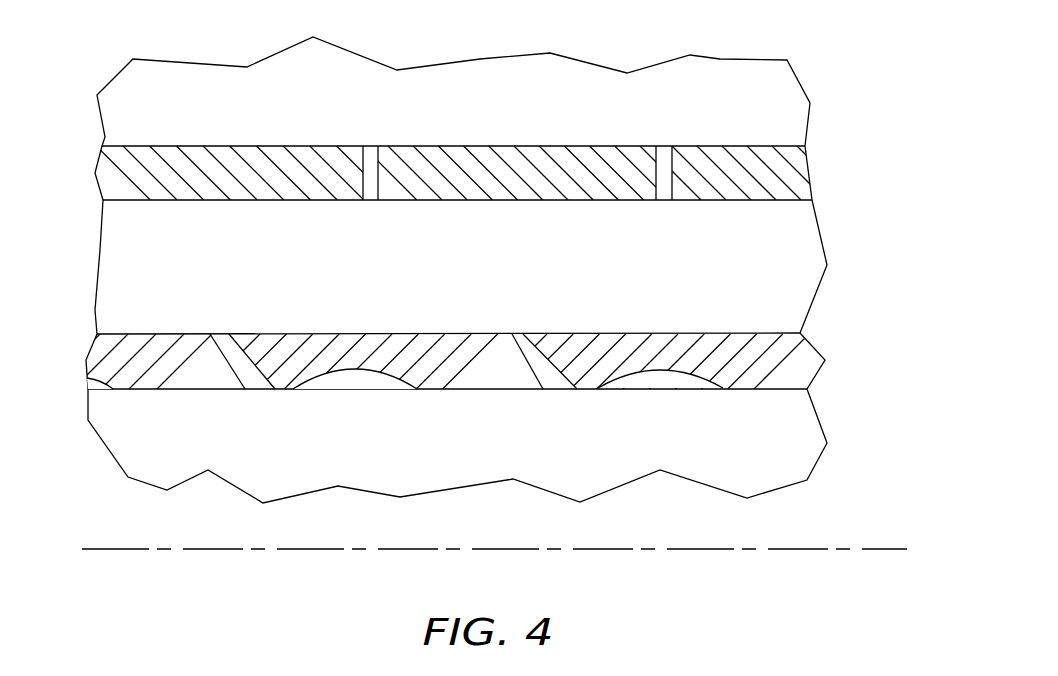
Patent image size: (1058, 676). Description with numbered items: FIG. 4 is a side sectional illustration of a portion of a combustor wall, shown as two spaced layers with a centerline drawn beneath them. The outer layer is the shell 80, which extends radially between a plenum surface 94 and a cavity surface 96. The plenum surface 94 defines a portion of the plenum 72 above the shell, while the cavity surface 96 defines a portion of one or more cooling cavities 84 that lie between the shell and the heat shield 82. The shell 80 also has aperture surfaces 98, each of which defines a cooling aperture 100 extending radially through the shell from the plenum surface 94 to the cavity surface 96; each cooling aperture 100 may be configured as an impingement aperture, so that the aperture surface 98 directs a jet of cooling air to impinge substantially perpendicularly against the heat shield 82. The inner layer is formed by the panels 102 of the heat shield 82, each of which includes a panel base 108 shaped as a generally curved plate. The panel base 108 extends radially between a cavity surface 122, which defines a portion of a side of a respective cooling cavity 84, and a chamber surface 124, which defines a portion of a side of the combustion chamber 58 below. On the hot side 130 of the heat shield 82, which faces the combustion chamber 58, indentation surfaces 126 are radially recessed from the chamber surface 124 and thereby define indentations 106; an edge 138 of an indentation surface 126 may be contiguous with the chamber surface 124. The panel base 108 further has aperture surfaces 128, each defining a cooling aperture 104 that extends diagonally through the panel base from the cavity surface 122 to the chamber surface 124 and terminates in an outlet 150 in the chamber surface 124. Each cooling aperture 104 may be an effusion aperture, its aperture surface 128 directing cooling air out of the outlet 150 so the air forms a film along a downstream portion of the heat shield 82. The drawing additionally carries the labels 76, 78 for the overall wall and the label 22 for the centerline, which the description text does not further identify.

The centerline of the article 22 is at (857, 549).
The combustion chamber 58 is at (502, 452).
The plenum 72 is at (422, 119).
The sealing assembly 76 is at (890, 68).
The sealing assembly layer 78 is at (855, 108).
The shell 80 is at (510, 173).
The heat shield 82 is at (474, 389).
The cooling cavity 84 is at (465, 259).
The plenum surface 94 is at (145, 146).
The cavity surface 96 is at (165, 200).
The aperture surface 98 is at (363, 177).
The cooling aperture 100 is at (368, 153).
The panel 102 is at (474, 389).
The cooling aperture 104 is at (253, 380).
The indentation 106 is at (87, 391).
The panel base 108 is at (813, 370).
The cavity surface 122 is at (122, 334).
The chamber surface 124 is at (138, 389).
The indentation surface 126 is at (385, 378).
The aperture surface 128 is at (243, 362).
The side of the heat shield 130 is at (777, 400).
The edge of the indentation surface 138 is at (293, 389).
The outlet 150 is at (239, 402).